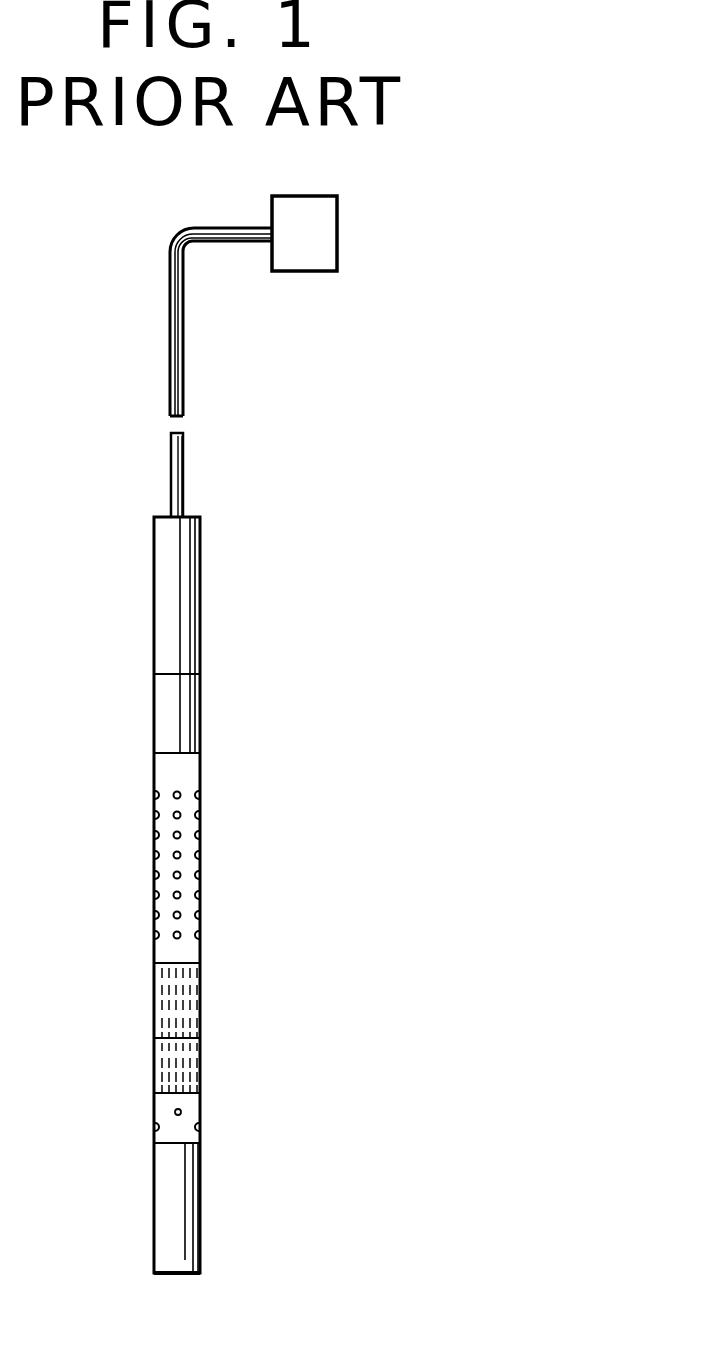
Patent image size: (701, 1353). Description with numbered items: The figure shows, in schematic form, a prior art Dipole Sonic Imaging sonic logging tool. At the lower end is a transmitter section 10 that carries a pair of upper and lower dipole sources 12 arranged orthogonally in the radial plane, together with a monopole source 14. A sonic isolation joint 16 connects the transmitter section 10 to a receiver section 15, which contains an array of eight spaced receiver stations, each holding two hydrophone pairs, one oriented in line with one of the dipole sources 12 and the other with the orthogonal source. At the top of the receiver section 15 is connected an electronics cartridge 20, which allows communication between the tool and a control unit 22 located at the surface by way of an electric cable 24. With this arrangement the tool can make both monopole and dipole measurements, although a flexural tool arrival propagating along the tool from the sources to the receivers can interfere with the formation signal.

The transmitter section 10 is at (214, 1154).
The dipole sources 12 is at (203, 1123).
The monopole source 14 is at (202, 1070).
The receiver section 15 is at (208, 877).
The sonic isolation joint 16 is at (202, 1005).
The electronics cartridge 20 is at (199, 594).
The control unit 22 is at (338, 243).
The electric cable 24 is at (186, 358).